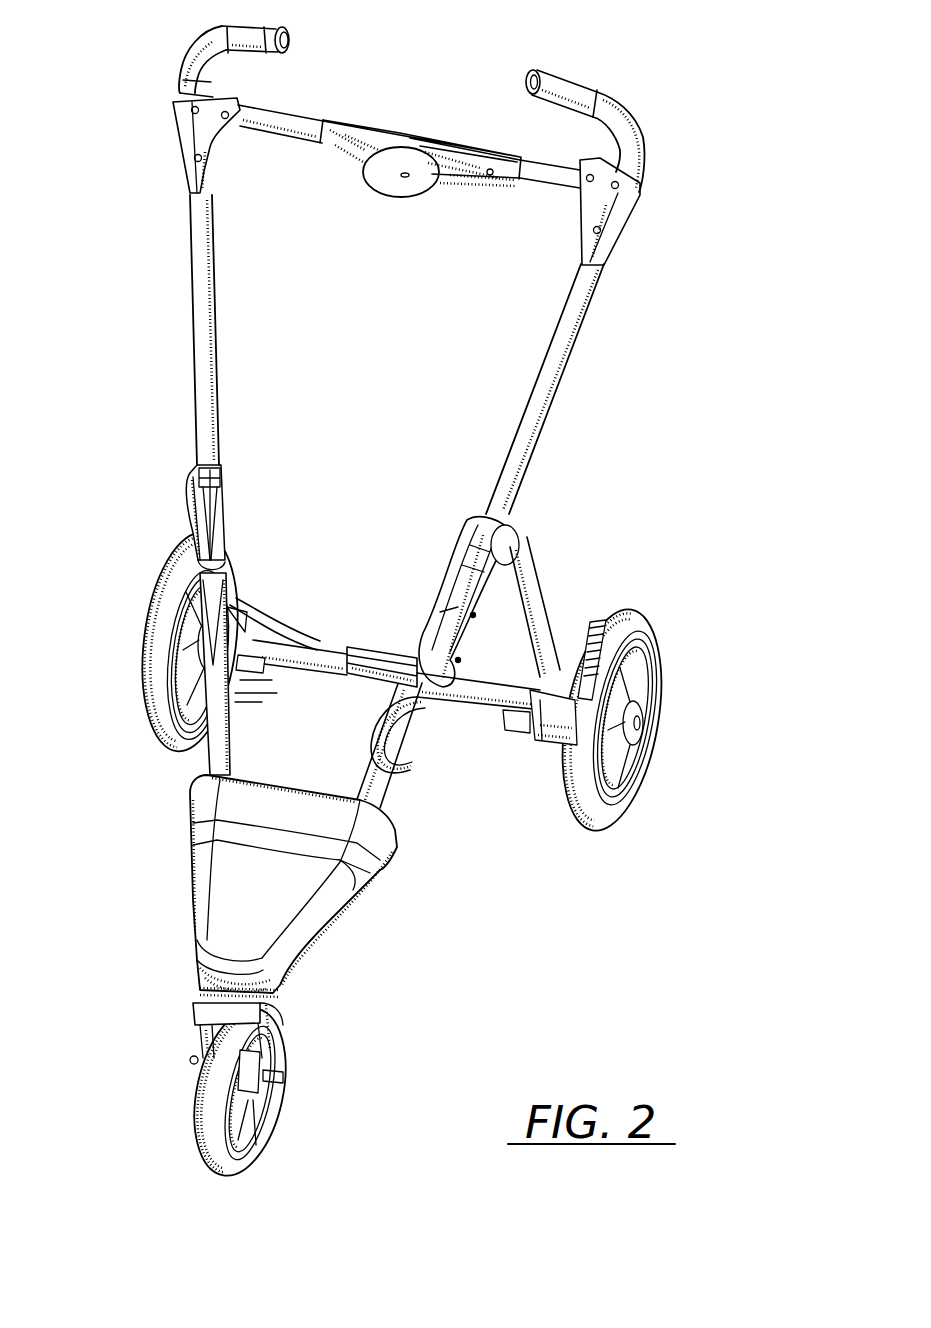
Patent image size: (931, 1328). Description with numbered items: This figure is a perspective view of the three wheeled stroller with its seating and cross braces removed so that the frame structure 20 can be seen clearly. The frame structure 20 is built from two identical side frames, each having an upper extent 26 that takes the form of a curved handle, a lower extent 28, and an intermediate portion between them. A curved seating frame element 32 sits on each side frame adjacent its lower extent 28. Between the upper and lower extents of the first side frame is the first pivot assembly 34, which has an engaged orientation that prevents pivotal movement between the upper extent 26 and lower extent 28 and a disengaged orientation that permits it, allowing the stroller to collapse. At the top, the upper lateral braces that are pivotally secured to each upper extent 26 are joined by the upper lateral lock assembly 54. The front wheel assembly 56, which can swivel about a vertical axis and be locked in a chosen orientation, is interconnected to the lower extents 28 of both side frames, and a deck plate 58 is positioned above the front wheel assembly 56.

The frame structure 20 is at (442, 592).
The upper extent 26 is at (197, 205).
The lower extent 28 is at (207, 737).
The curved seating frame element 32 is at (222, 721).
The first pivot assembly 34 is at (197, 508).
The upper lateral lock assembly 54 is at (410, 117).
The front wheel assembly 56 is at (290, 1003).
The deck plate 58 is at (252, 920).